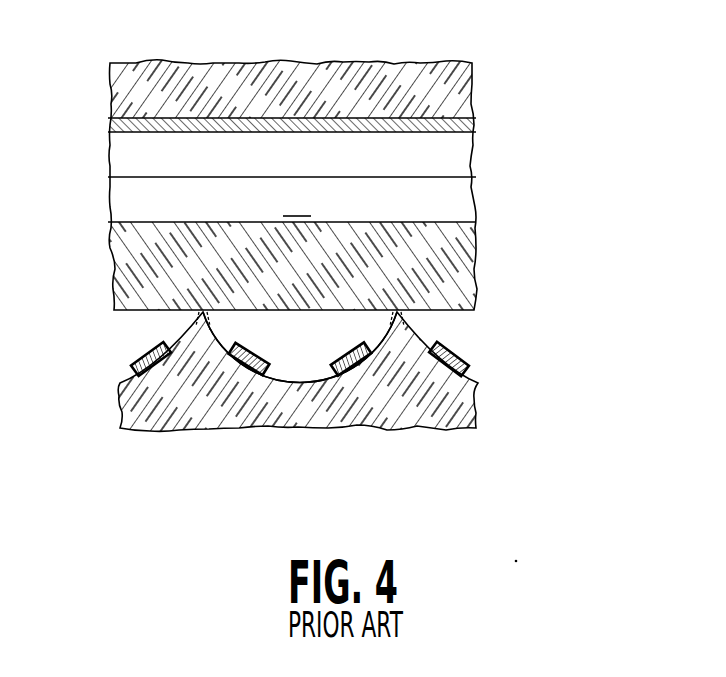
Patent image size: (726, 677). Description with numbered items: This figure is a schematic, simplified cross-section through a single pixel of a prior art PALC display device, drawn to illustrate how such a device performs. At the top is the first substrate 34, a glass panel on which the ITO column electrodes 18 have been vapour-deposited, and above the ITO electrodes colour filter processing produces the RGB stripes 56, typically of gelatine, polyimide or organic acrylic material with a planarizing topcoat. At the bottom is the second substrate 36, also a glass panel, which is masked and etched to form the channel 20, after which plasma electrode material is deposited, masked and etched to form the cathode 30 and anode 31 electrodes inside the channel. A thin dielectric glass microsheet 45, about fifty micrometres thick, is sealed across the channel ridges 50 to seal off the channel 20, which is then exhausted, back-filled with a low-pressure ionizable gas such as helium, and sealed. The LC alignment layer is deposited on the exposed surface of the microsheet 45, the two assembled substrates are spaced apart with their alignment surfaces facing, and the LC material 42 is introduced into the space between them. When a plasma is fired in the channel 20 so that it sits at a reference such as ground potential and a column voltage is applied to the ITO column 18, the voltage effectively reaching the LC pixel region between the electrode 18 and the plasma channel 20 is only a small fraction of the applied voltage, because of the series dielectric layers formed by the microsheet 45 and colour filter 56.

The first substrate 34 is at (468, 84).
The ITO column electrodes 18 is at (473, 122).
The RGB stripes (colour filter) 56 is at (467, 158).
The LC material 42 is at (472, 200).
The dielectric glass microsheet 45 is at (477, 262).
The second substrate 36 is at (478, 396).
The channel 20 is at (314, 347).
The channel ridges 50 is at (183, 332).
The anode electrode 31 is at (241, 373).
The cathode electrode 30 is at (362, 372).